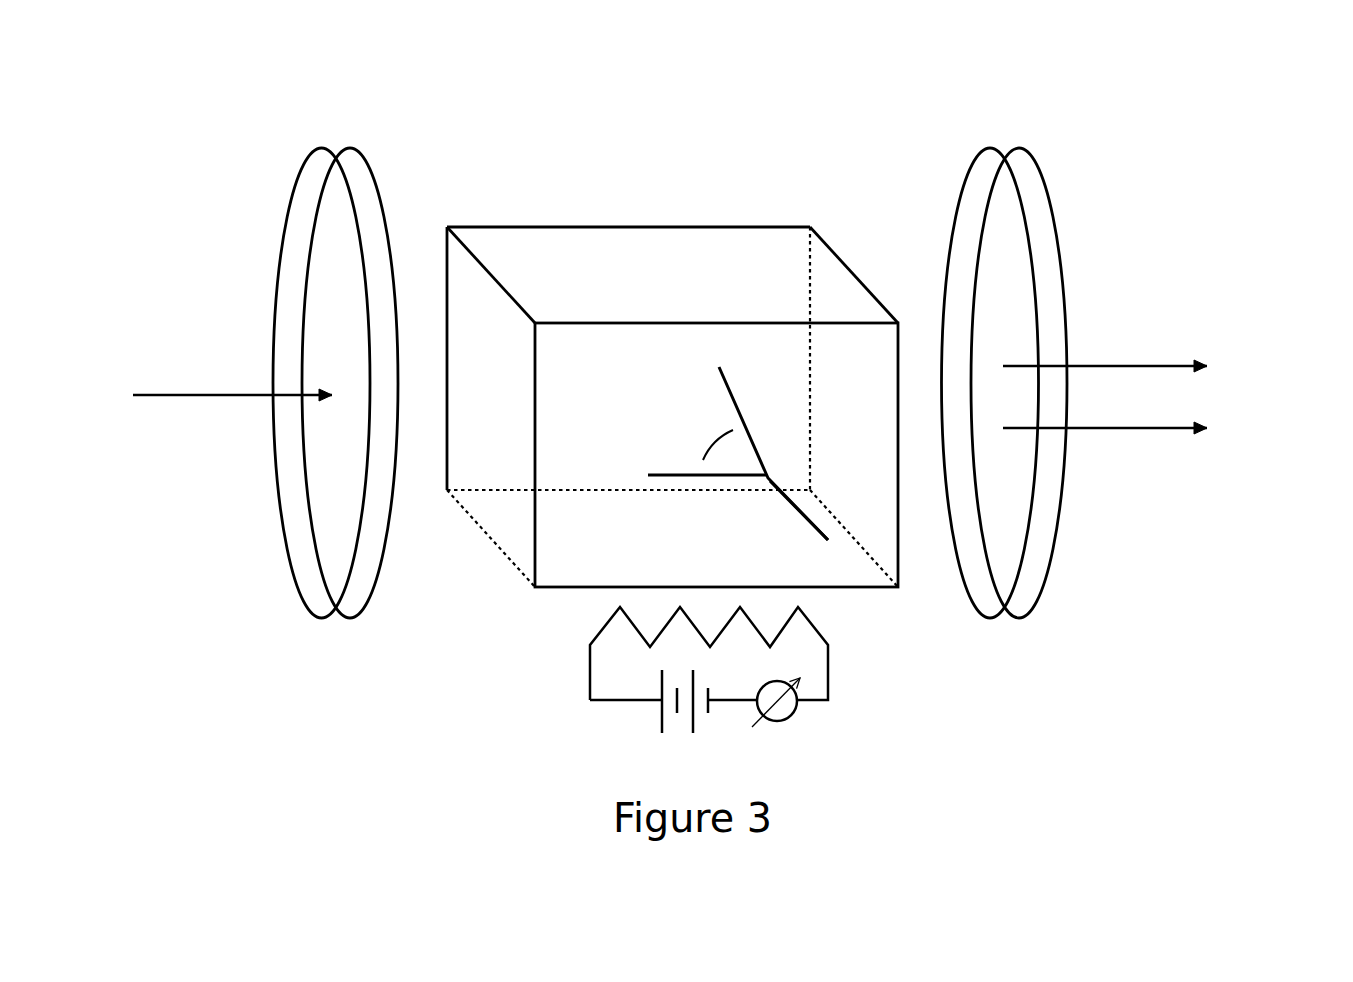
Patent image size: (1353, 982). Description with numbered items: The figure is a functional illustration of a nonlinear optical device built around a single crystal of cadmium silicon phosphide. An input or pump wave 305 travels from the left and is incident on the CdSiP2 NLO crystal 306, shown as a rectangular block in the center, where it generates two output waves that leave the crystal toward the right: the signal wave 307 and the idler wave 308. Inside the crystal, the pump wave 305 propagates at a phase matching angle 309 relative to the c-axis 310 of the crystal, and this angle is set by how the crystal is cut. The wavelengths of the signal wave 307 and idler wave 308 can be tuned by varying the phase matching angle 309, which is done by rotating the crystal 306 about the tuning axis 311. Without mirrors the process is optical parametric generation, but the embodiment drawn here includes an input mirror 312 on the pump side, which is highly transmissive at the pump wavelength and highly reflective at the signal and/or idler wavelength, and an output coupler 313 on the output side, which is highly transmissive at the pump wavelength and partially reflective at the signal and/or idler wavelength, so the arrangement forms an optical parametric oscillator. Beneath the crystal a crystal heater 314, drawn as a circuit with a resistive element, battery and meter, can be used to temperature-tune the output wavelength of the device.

The input or pump wave 305 is at (163, 372).
The CdSiP2 NLO crystal 306 is at (622, 226).
The signal wave 307 is at (1103, 348).
The idler wave 308 is at (1202, 410).
The phase matching angle 309 is at (685, 430).
The c-axis 310 is at (760, 401).
The tuning axis 311 is at (790, 515).
The input mirror 312 is at (375, 177).
The output coupler 313 is at (1043, 177).
The crystal heater 314 is at (590, 668).